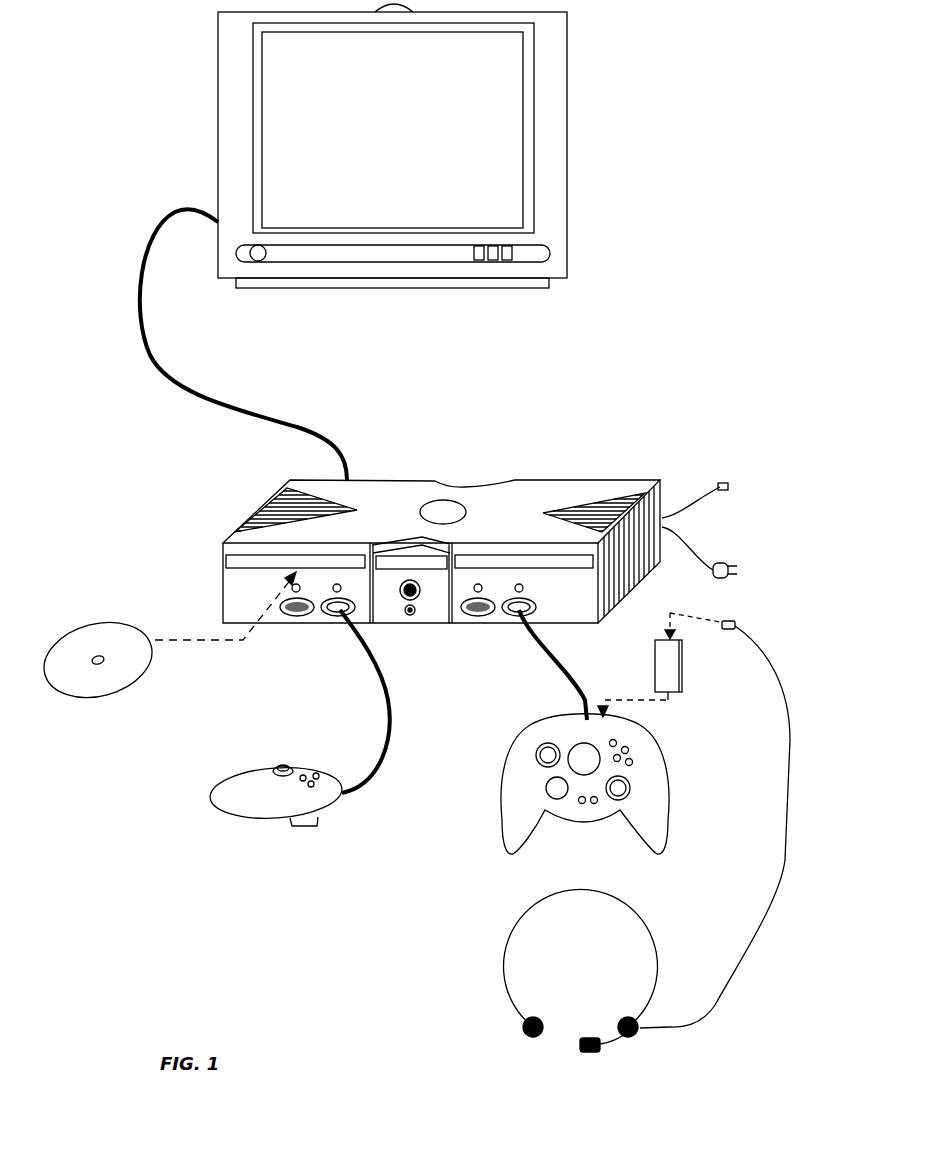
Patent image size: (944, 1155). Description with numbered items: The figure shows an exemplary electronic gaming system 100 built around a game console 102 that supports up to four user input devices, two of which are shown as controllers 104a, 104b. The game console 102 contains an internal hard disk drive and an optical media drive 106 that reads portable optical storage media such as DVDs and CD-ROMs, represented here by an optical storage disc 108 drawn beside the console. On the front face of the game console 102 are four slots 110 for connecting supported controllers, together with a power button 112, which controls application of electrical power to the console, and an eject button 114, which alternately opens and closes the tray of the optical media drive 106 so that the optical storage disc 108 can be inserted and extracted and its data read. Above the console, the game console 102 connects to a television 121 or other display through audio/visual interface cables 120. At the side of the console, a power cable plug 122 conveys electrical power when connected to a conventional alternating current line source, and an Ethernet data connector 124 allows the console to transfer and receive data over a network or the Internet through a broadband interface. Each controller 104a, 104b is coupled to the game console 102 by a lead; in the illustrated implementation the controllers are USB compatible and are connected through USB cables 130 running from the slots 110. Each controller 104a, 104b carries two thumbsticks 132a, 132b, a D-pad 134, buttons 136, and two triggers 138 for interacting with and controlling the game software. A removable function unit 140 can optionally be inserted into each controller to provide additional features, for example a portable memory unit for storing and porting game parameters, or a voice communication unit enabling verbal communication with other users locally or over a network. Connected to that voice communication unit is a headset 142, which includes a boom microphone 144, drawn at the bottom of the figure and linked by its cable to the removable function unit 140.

The electronic gaming system 100 is at (566, 413).
The game console 102 is at (312, 480).
The controller 104a is at (275, 817).
The controller 104b is at (505, 846).
The optical media drive 106 is at (222, 547).
The optical storage disc 108 is at (108, 695).
The slots 110 is at (338, 617).
The power button 112 is at (412, 616).
The eject button 114 is at (410, 580).
The audio/visual interface cables 120 is at (340, 447).
The television 121 is at (567, 108).
The power cable plug 122 is at (740, 563).
The Ethernet data connector 124 is at (690, 510).
The USB cables 130 is at (386, 698).
The thumbstick 132a is at (535, 755).
The thumbstick 132b is at (282, 766).
The D-pad 134 is at (545, 788).
The buttons 136 is at (627, 750).
The triggers 138 is at (318, 822).
The removable function unit 140 is at (683, 691).
The headset 142 is at (503, 985).
The boom microphone 144 is at (588, 1055).